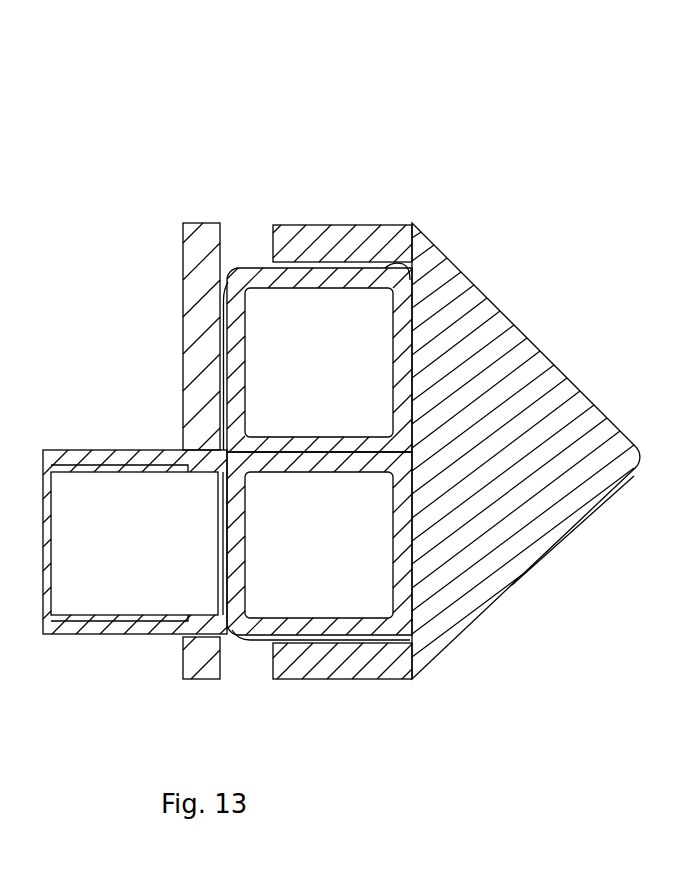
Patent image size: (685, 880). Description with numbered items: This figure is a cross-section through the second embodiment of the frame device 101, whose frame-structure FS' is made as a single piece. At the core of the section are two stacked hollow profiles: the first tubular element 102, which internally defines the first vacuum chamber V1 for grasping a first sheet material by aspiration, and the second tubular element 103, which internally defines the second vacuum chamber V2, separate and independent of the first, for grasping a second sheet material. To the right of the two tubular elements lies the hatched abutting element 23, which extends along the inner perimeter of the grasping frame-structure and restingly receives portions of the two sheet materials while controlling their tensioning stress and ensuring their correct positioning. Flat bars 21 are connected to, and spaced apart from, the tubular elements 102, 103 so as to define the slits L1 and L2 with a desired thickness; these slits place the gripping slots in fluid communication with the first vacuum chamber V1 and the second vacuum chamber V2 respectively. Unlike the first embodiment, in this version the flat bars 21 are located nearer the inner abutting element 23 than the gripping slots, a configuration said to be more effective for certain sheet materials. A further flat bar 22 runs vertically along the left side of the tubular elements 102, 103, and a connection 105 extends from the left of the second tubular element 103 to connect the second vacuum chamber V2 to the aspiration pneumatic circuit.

The frame device 101 is at (433, 153).
The bar of flat shape 21 is at (382, 246).
The bar of flat shape 22 is at (200, 387).
The abutting element 23 is at (537, 393).
The first tubular element 102 is at (407, 293).
The second tubular element 103 is at (400, 594).
The second connection 105 is at (87, 627).
The slit L1 is at (357, 270).
The slit L2 is at (310, 642).
The first vacuum chamber V1 is at (275, 345).
The second vacuum chamber V2 is at (327, 580).